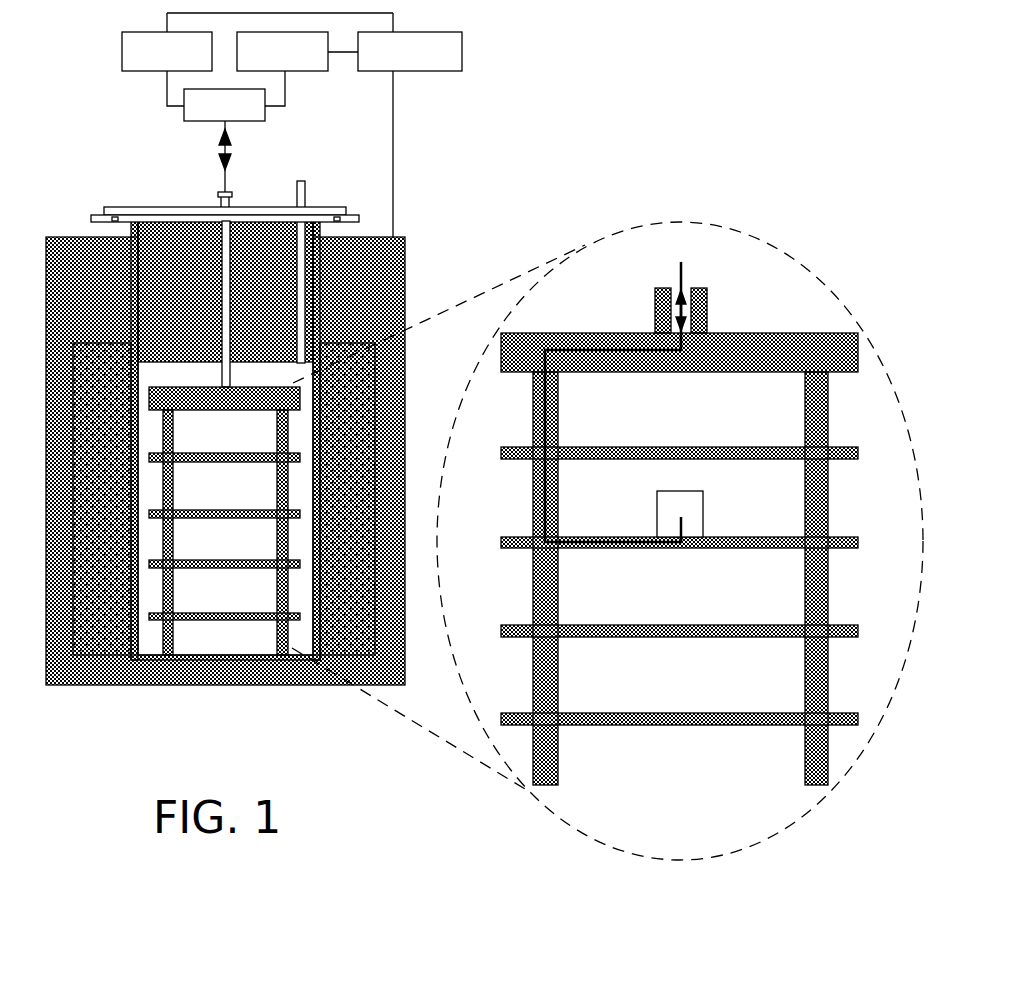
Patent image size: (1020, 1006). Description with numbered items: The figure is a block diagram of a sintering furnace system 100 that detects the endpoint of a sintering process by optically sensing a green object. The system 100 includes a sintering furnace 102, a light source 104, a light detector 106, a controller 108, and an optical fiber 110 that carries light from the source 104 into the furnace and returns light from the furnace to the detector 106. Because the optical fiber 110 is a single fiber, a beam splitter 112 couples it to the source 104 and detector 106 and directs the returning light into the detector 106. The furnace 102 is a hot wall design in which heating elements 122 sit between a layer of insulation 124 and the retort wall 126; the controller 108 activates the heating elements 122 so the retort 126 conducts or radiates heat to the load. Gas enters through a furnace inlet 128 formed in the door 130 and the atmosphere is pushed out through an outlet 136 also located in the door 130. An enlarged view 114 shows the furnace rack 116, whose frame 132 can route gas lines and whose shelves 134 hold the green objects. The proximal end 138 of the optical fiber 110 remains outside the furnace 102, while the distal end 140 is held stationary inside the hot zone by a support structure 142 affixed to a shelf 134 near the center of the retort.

The sintering furnace system 100 is at (558, 46).
The sintering furnace 102 is at (75, 203).
The light source 104 is at (142, 72).
The light detector 106 is at (302, 72).
The controller 108 is at (415, 72).
The optical fiber 110 is at (222, 176).
The beam splitter 112 is at (258, 122).
The enlarged view 114 is at (620, 233).
The furnace rack 116 is at (189, 384).
The heating elements 122 is at (100, 333).
The insulation 124 is at (63, 245).
The retort wall 126 is at (129, 458).
The furnace inlet 128 is at (231, 193).
The door 130 is at (168, 222).
The frame 132 is at (277, 440).
The shelves 134 is at (240, 560).
The outlet 136 is at (306, 190).
The proximal end 138 is at (218, 128).
The distal end 140 is at (692, 514).
The support structure 142 is at (657, 503).